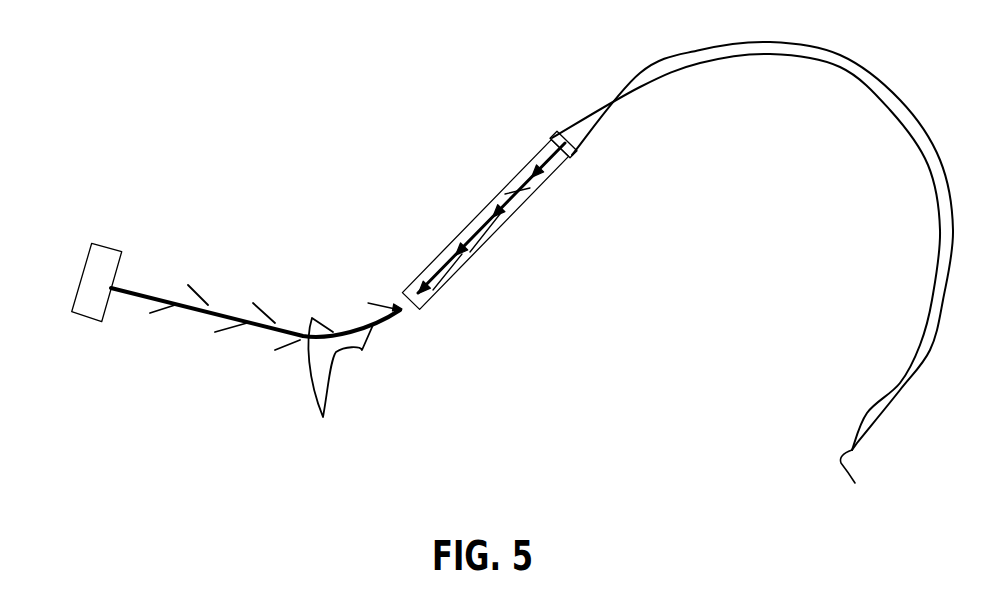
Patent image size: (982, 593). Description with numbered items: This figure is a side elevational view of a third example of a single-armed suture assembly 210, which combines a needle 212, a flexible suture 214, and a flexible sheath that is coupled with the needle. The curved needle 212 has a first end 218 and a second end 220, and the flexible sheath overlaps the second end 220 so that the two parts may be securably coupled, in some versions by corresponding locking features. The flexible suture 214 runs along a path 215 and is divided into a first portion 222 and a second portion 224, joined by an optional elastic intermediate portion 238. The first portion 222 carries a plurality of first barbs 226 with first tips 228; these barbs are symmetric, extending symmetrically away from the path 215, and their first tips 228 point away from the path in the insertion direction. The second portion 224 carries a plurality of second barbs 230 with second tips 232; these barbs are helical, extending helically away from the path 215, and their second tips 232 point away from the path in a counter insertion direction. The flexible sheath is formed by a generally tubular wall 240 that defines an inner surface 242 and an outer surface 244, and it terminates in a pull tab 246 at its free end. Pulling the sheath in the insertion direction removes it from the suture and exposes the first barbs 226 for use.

The single-armed suture assembly 210 is at (248, 80).
The needle 212 is at (882, 78).
The flexible suture 214 is at (335, 250).
The path 215 is at (137, 297).
The first end 218 is at (847, 486).
The second end 220 is at (540, 155).
The first portion 222 is at (482, 207).
The second portion 224 is at (222, 267).
The first barbs 226 is at (470, 254).
The first tips 228 is at (427, 267).
The second barbs 230 is at (280, 357).
The second tips 232 is at (333, 385).
The elastic intermediate portion 238 is at (407, 300).
The tubular wall 240 is at (480, 243).
The inner surface 242 is at (530, 187).
The outer surface 244 is at (560, 167).
The pull tab 246 is at (96, 262).